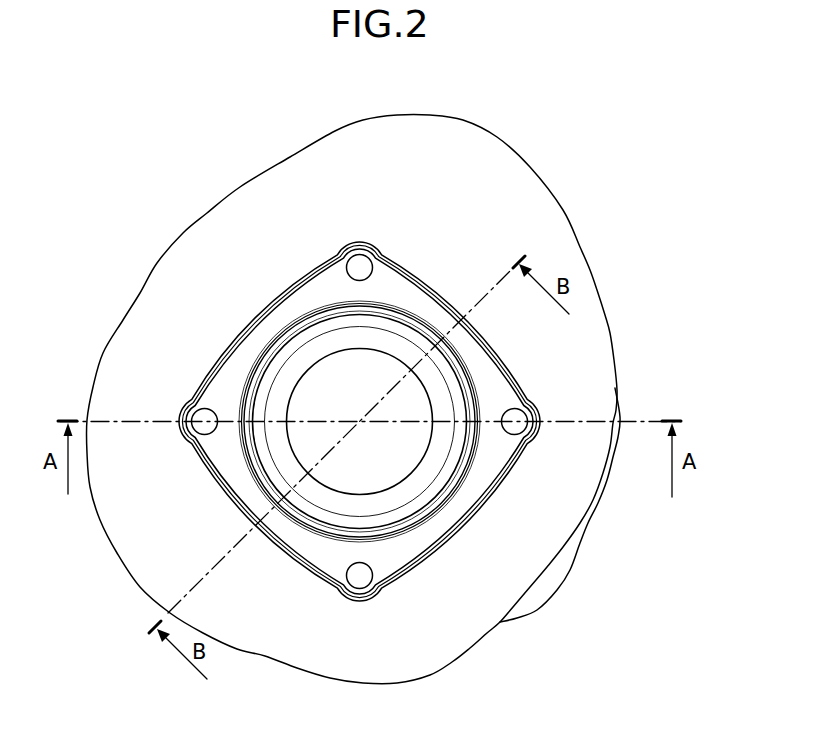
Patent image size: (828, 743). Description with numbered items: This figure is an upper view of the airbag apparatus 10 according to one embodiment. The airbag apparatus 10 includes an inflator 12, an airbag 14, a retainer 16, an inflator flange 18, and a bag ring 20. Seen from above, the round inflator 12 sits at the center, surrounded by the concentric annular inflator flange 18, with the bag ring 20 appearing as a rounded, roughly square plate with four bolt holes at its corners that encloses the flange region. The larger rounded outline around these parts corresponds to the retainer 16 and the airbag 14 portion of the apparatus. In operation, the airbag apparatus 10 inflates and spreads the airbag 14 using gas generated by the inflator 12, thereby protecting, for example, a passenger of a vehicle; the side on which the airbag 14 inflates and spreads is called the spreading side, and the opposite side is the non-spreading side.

The airbag apparatus 10 is at (563, 146).
The inflator 12 is at (345, 365).
The airbag 14 is at (587, 353).
The retainer 16 is at (558, 569).
The inflator flange 18 is at (288, 352).
The bag ring 20 is at (235, 377).